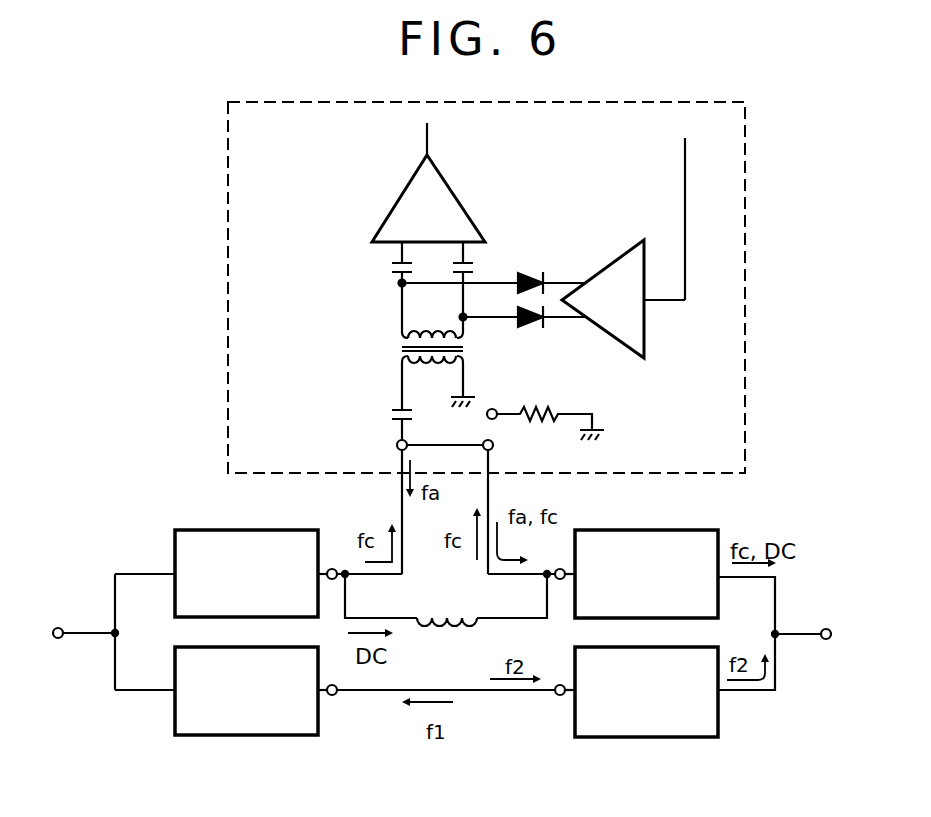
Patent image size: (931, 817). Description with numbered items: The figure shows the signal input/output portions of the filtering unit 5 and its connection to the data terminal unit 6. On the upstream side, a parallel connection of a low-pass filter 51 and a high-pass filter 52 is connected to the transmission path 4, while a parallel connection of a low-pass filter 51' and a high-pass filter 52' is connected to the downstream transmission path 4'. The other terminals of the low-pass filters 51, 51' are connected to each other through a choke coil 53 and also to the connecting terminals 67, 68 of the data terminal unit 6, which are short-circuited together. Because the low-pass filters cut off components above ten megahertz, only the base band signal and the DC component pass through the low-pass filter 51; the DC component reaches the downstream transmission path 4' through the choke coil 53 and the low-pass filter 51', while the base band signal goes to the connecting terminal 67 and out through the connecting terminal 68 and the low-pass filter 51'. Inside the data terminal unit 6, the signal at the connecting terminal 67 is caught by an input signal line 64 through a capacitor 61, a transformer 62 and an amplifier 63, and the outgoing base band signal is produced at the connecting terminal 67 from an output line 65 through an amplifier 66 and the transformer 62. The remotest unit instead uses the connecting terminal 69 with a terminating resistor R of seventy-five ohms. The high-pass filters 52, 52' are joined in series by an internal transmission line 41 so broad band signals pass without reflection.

The transmission path 4 is at (114, 624).
The downstream transmission path 4' is at (780, 639).
The filtering unit 5 is at (467, 752).
The data terminal unit 6 is at (745, 270).
The internal transmission line 41 is at (490, 692).
The low-pass filter 51 is at (247, 544).
The low-pass filter 51' is at (666, 550).
The high-pass filter 52 is at (256, 718).
The high-pass filter 52' is at (663, 719).
The choke coil 53 is at (430, 627).
The capacitor 61 is at (392, 412).
The transformer 62 is at (470, 338).
The amplifier 63 is at (470, 214).
The input signal line 64 is at (428, 142).
The output line 65 is at (685, 170).
The amplifier 66 is at (645, 330).
The connecting terminal 67 is at (397, 445).
The connecting terminal 68 is at (493, 445).
The connecting terminal 69 is at (496, 410).
The terminating resistor R is at (553, 426).